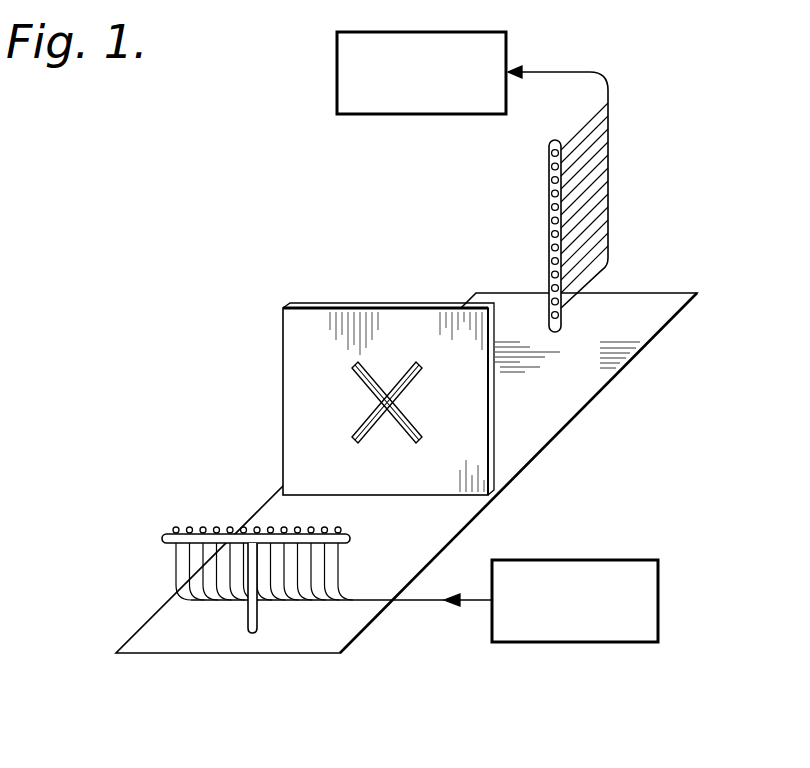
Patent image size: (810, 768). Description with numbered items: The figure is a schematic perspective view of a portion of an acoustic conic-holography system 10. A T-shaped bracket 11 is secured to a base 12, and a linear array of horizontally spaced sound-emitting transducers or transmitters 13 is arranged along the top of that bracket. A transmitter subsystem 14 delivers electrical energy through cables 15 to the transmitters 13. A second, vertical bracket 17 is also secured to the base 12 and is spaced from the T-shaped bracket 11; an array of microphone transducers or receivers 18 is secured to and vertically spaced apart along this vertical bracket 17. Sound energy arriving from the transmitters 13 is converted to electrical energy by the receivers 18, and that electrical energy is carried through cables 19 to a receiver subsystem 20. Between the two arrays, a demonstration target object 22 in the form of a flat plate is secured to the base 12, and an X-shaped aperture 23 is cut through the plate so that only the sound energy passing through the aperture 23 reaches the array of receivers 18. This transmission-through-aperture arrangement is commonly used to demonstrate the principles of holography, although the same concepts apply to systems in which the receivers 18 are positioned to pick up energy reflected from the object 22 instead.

The acoustic conic-holography system 10 is at (268, 208).
The T-shaped bracket 11 is at (261, 617).
The base 12 is at (155, 621).
The transmitters 13 is at (216, 527).
The transmitter subsystem 14 is at (640, 558).
The cables 15 is at (305, 580).
The vertical bracket 17 is at (561, 322).
The receivers 18 is at (549, 233).
The cables 19 is at (597, 178).
The receiver subsystem 20 is at (507, 48).
The demonstration target object 22 is at (470, 405).
The X-shaped aperture 23 is at (372, 392).